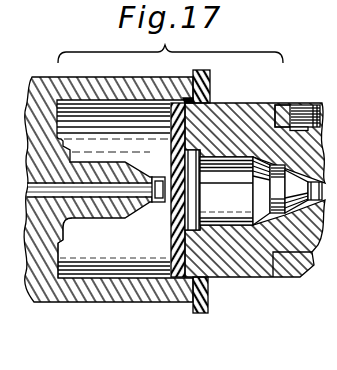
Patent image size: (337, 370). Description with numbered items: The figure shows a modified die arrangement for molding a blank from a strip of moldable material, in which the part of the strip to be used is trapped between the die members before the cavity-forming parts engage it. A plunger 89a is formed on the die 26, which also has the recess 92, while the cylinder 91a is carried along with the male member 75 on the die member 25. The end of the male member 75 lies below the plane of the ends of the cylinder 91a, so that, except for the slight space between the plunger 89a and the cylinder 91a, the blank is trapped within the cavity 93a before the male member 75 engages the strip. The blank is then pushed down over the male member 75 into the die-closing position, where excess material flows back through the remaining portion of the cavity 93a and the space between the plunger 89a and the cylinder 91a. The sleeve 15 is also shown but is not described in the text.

The die member 25 is at (39, 77).
The cylinder 91a is at (138, 77).
The flange ring 15 is at (210, 77).
The die 26 is at (256, 103).
The male member 75 is at (101, 218).
The cavity 93a is at (123, 266).
The recess 92 is at (230, 210).
The plunger 89a is at (256, 270).